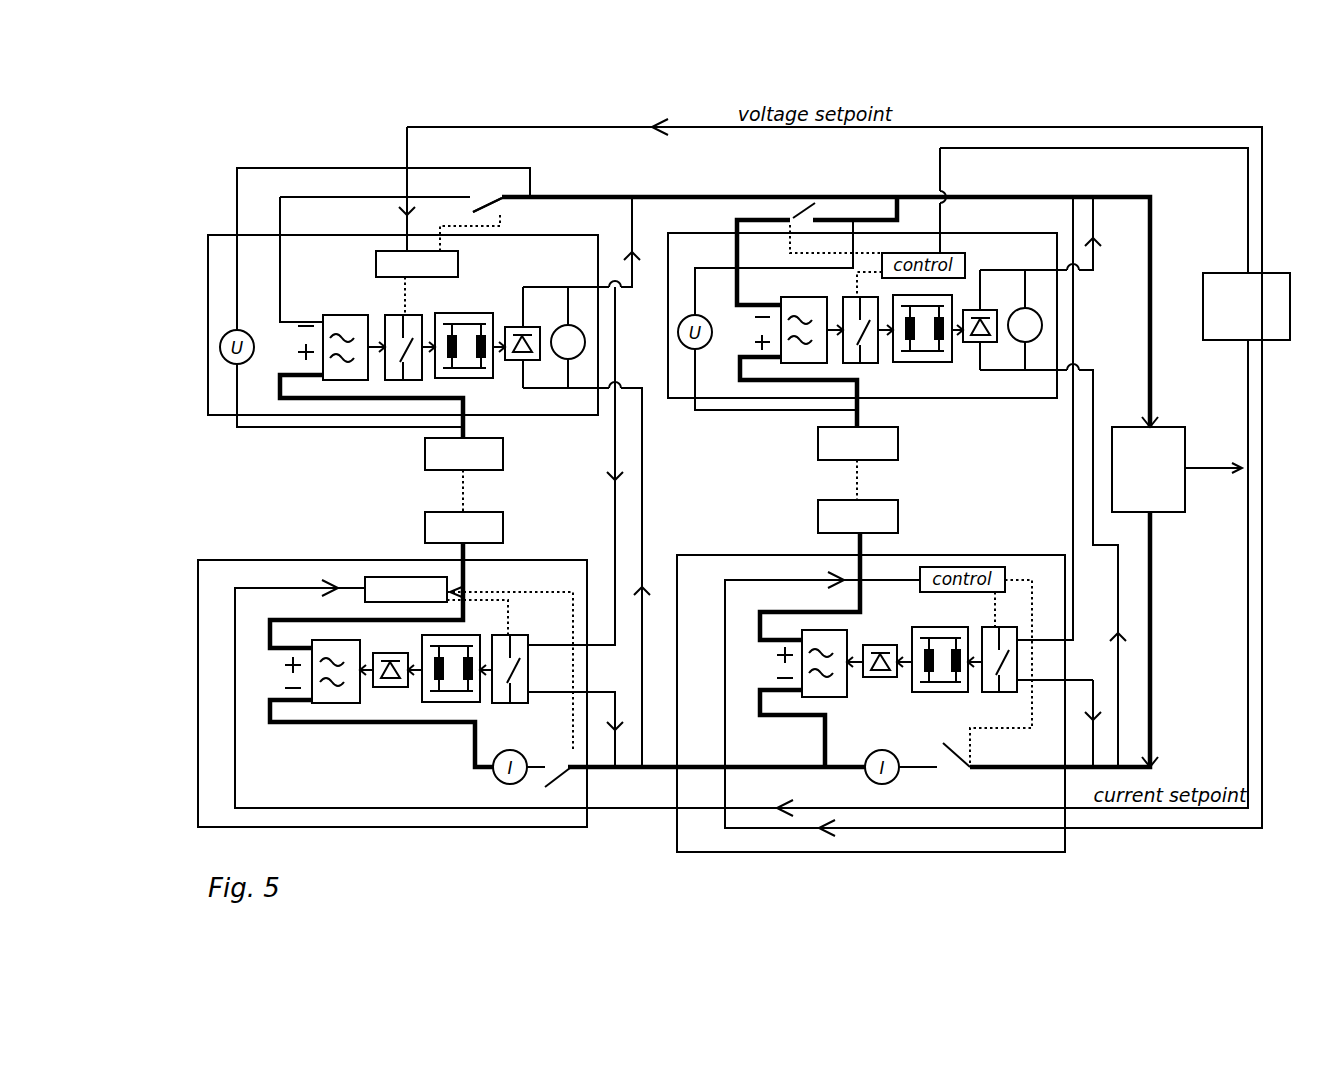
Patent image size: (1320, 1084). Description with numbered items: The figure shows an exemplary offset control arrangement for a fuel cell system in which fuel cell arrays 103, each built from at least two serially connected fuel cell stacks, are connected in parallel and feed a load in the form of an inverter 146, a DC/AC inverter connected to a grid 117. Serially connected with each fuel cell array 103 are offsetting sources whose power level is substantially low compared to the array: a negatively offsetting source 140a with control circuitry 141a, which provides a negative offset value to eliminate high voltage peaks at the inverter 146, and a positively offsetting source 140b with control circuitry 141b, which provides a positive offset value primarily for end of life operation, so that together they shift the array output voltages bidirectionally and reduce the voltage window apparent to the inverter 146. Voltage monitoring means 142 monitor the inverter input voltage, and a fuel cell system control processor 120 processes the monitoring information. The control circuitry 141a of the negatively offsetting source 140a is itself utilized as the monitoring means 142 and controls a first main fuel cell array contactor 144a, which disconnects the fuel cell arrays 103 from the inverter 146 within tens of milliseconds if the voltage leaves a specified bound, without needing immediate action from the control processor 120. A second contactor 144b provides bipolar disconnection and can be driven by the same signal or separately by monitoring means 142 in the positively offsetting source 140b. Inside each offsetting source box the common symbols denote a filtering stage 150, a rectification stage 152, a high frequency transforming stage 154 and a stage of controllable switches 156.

The fuel cell array 103 is at (425, 462).
The grid 117 is at (1205, 471).
The fuel cell system control processor 120 is at (1235, 273).
The negatively offsetting source 140a is at (208, 385).
The positively offsetting source 140b is at (198, 635).
The control circuitry of the negatively offsetting source 141a is at (458, 270).
The control circuitry of the positively offsetting source 141b is at (450, 590).
The voltage monitoring means 142 is at (578, 326).
The first main fuel cell array contactor 144a is at (475, 212).
The second contactor 144b is at (573, 755).
The inverter 146 is at (1165, 427).
The filtering stage 150 is at (335, 703).
The rectification stage 152 is at (393, 688).
The high frequency transforming stage 154 is at (437, 703).
The stage of controllable switches 156 is at (500, 703).